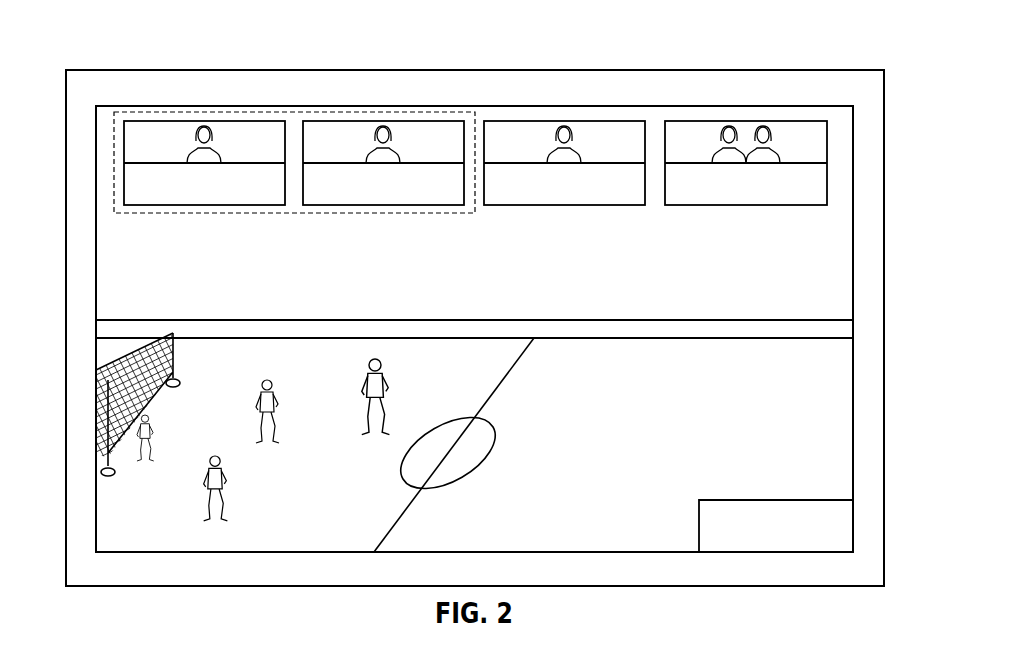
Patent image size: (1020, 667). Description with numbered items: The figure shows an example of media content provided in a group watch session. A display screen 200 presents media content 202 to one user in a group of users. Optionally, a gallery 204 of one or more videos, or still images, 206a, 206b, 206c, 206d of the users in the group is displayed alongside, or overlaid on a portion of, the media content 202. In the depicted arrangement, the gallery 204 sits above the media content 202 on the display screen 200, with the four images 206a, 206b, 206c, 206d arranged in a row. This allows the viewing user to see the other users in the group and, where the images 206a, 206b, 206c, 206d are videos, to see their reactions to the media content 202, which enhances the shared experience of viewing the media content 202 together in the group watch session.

The display screen 200 is at (110, 35).
The media content 202 is at (832, 248).
The gallery 204 is at (106, 151).
The video or still image of a user 206a is at (205, 120).
The video or still image of a user 206b is at (385, 120).
The video or still image of a user 206c is at (565, 120).
The video or still image of a user 206d is at (747, 120).